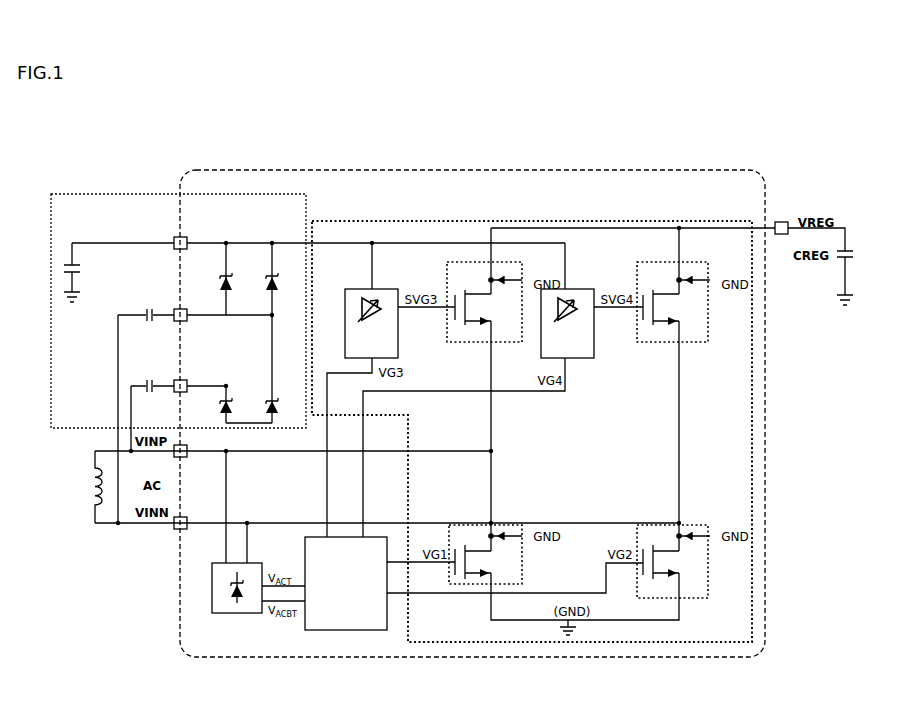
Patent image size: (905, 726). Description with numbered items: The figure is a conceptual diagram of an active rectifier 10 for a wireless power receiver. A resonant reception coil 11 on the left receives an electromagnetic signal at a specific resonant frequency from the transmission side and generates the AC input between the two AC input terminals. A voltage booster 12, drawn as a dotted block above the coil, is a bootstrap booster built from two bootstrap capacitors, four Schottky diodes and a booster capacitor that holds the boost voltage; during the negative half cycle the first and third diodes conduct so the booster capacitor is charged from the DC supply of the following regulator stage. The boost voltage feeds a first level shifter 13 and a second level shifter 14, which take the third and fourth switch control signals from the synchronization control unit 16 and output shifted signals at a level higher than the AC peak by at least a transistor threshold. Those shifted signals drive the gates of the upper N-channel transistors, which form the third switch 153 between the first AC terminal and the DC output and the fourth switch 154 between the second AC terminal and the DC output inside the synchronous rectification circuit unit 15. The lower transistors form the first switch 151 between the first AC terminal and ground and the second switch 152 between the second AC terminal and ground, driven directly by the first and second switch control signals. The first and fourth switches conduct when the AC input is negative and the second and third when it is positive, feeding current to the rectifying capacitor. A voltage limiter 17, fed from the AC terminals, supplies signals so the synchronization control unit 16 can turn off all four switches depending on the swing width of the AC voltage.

The active rectifier 10 is at (406, 144).
The resonant reception coil 11 is at (86, 490).
The voltage booster 12 is at (107, 194).
The first level shifter 13 is at (391, 289).
The second level shifter 14 is at (581, 289).
The synchronous rectification circuit unit 15 is at (765, 432).
The synchronization control unit 16 is at (347, 630).
The voltage limiter 17 is at (212, 587).
The first switch 151 is at (510, 584).
The second switch 152 is at (698, 598).
The third switch 153 is at (472, 262).
The fourth switch 154 is at (664, 262).